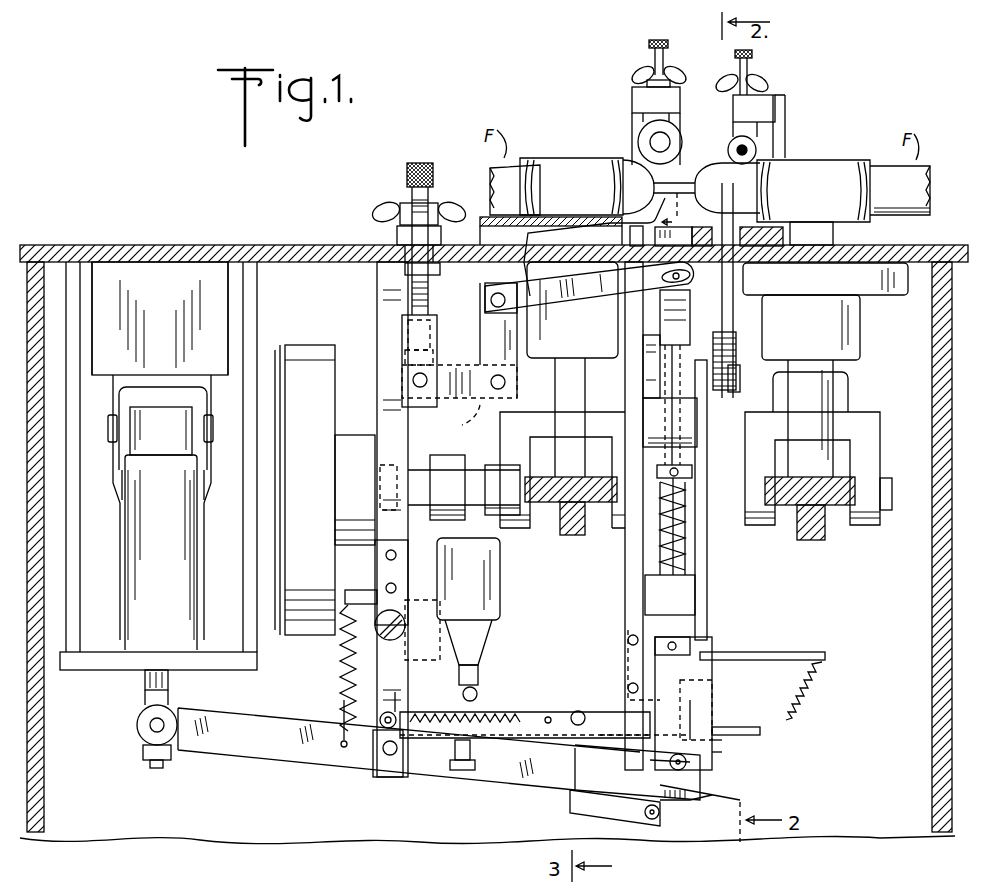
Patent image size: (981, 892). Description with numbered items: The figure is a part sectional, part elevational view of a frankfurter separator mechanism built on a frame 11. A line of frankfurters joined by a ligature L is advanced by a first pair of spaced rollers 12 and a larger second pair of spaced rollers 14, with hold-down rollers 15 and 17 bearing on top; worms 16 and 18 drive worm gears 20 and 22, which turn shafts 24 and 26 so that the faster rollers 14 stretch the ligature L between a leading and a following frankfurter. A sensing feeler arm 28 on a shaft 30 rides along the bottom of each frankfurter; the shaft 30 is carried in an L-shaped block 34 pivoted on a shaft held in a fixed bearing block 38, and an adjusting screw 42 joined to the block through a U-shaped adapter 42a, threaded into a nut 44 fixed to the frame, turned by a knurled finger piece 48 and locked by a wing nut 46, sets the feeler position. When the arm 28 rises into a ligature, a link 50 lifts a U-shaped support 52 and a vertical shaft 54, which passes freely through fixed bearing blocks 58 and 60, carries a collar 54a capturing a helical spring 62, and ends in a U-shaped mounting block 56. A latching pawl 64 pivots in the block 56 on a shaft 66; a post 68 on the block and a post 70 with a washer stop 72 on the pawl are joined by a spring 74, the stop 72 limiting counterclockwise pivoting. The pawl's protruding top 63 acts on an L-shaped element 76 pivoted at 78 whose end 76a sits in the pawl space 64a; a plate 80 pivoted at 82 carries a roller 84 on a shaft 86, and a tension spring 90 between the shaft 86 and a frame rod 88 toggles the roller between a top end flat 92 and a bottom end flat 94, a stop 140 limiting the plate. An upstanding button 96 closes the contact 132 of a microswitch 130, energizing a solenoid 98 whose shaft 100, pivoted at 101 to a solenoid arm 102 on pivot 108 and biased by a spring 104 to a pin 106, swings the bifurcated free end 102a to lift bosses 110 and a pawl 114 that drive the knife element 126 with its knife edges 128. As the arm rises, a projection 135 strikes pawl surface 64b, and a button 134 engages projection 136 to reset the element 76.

The frame 11 is at (172, 246).
The first pair of spaced rollers 12 is at (550, 160).
The second pair of spaced rollers 14 is at (838, 166).
The hold-down roller 15 is at (644, 140).
The worm 16 is at (568, 528).
The hold-down roller 17 is at (756, 150).
The worm 18 is at (832, 528).
The worm gear 20 is at (546, 518).
The worm gear 22 is at (792, 530).
The shaft 24 is at (562, 409).
The shaft 26 is at (806, 364).
The sensing feeler arm 28 is at (648, 214).
The shaft 30 is at (492, 300).
The L-shaped block 34 is at (500, 364).
The fixed bearing block 38 is at (450, 420).
The adjusting screw 42 is at (412, 184).
The U-shaped adapter 42a is at (400, 348).
The threaded nut 44 is at (398, 258).
The wing nut 46 is at (385, 212).
The knurled finger piece 48 is at (408, 174).
The link 50 is at (590, 296).
The U-shaped support 52 is at (660, 312).
The vertical shaft 54 is at (690, 470).
The collar 54a is at (688, 524).
The U-shaped mounting block 56 is at (708, 640).
The fixed bearing block 58 is at (650, 412).
The fixed bearing block 60 is at (700, 584).
The helical spring 62 is at (690, 560).
The protruding top of pawl 63 is at (646, 665).
The latching pawl 64 is at (704, 692).
The space of pawl 64a is at (700, 716).
The surface of pawl 64b is at (650, 772).
The shaft 66 is at (688, 764).
The post 68 is at (804, 654).
The post 70 is at (762, 730).
The stop 72 is at (718, 742).
The spring 74 is at (802, 692).
The L-shaped element 76 is at (506, 712).
The end of L-shaped element 76a is at (643, 723).
The pivot 78 is at (580, 710).
The plate 80 is at (400, 654).
The pivot 82 is at (394, 620).
The roller 84 is at (344, 718).
The shaft 86 is at (383, 693).
The rod 88 is at (548, 716).
The tension spring 90 is at (488, 738).
The top end flat 92 is at (408, 716).
The bottom end flat 94 is at (400, 772).
The upstanding button 96 is at (477, 694).
The solenoid 98 is at (170, 527).
The solenoid shaft 100 is at (152, 696).
The pivot 101 is at (155, 728).
The solenoid arm 102 is at (290, 752).
The free end of solenoid arm 102a is at (712, 792).
The spring 104 is at (338, 648).
The pin 106 is at (360, 580).
The pivot 108 is at (378, 752).
The spaced bosses 110 is at (720, 756).
The pawl 114 is at (700, 438).
The knife element 126 is at (742, 320).
The knife edges 128 is at (730, 194).
The microswitch 130 is at (500, 600).
The contact 132 is at (484, 664).
The button 134 is at (612, 814).
The projection 135 is at (656, 820).
The projection 136 is at (624, 750).
The stop 140 is at (410, 686).
The ligature L is at (678, 184).